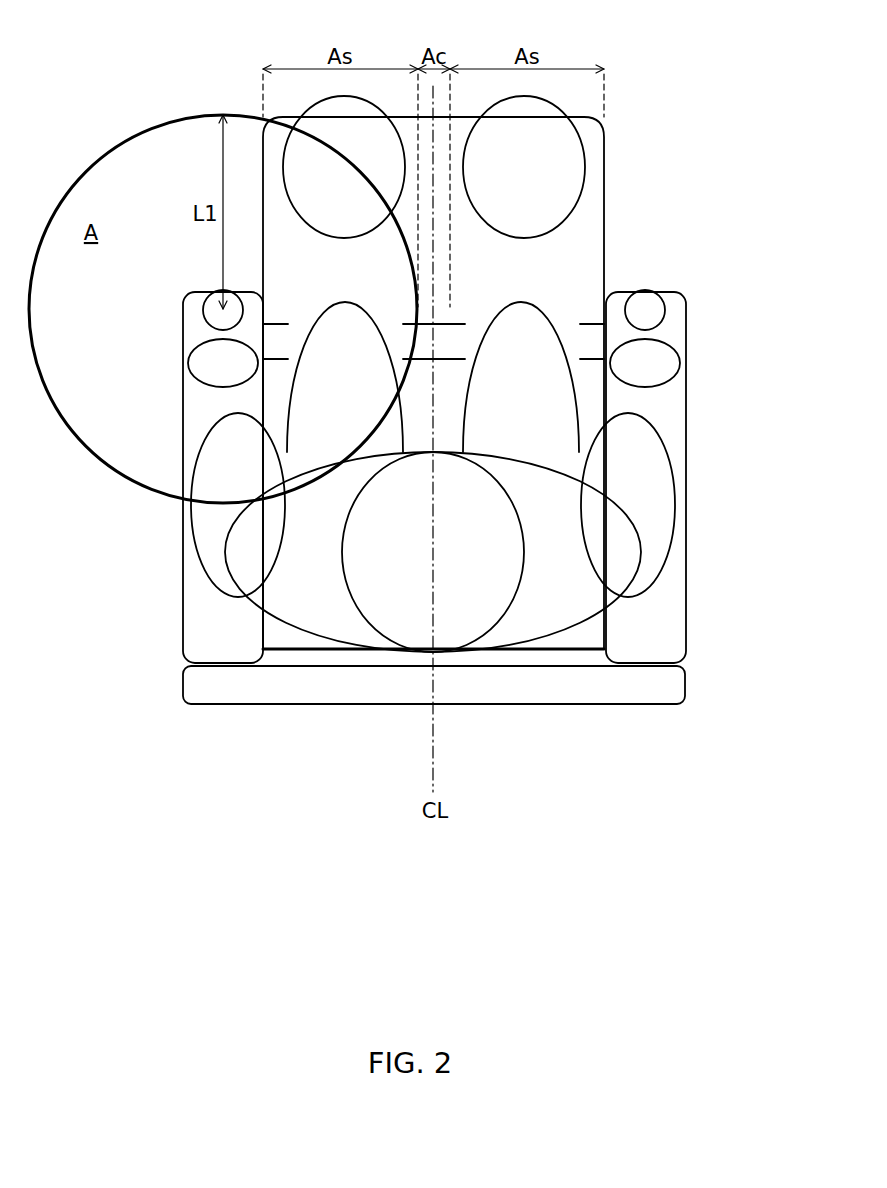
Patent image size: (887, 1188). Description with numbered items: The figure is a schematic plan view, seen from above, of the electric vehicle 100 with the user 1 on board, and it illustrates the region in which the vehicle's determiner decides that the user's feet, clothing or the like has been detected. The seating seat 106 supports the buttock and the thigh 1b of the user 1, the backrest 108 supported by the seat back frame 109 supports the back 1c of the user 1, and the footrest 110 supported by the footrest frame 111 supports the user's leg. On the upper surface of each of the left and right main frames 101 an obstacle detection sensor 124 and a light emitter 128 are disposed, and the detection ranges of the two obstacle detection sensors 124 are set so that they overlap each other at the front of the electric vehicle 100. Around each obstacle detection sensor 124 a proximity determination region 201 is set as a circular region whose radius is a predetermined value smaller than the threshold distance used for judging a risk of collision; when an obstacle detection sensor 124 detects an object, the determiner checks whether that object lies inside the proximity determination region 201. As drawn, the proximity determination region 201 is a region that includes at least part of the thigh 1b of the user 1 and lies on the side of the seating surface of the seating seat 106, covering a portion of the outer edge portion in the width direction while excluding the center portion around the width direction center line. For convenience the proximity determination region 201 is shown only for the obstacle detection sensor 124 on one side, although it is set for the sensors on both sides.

The electric vehicle 100 is at (710, 798).
The user 1 is at (665, 583).
The thigh 1b is at (315, 250).
The back 1c is at (532, 633).
The main frame 101 is at (210, 408).
The seating seat 106 is at (303, 638).
The backrest 108 is at (403, 660).
The seat back frame 109 is at (657, 688).
The footrest 110 is at (588, 323).
The footrest frame 111 is at (588, 200).
The obstacle detection sensor 124 is at (205, 307).
The light emitter 128 is at (210, 362).
The proximity determination region 201 is at (190, 115).